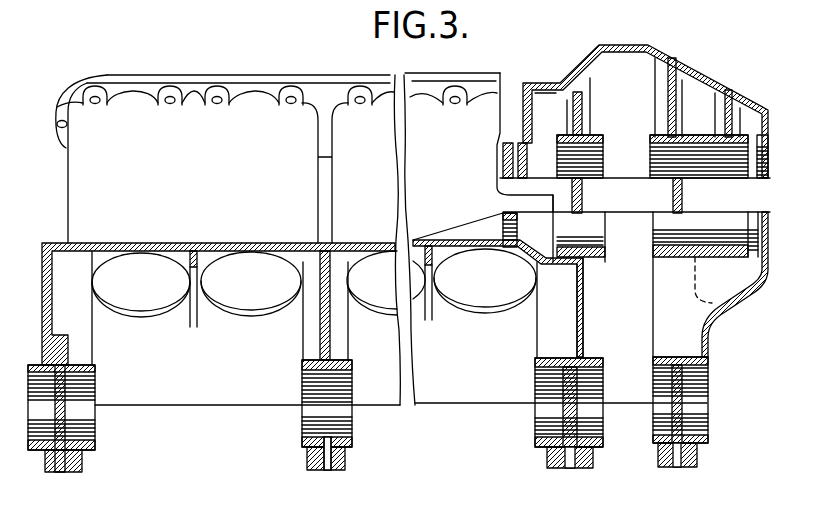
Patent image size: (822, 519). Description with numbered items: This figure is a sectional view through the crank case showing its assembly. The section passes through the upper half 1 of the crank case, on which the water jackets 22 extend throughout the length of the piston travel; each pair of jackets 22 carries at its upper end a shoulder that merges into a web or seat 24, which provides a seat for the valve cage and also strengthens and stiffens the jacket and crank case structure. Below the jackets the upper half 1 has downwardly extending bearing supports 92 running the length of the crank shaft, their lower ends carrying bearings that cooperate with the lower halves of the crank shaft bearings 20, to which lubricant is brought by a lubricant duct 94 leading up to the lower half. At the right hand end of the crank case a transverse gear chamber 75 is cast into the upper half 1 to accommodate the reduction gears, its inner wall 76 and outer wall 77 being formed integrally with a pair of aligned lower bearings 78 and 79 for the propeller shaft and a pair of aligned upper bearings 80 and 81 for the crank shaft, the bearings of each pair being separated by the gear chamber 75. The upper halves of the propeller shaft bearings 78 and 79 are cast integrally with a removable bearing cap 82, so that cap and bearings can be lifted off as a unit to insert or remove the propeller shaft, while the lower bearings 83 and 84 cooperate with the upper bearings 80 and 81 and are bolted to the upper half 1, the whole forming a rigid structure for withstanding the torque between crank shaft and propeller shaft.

The upper half 1 is at (555, 239).
The bearings 20 is at (96, 412).
The jackets 22 is at (221, 240).
The web or seat 24 is at (327, 87).
The gear chamber 75 is at (589, 309).
The inner wall 76 is at (586, 318).
The outer wall 77 is at (714, 306).
The inner lower bearing 78 is at (607, 237).
The outer lower bearing 79 is at (720, 224).
The inner upper bearing 80 is at (540, 383).
The outer upper bearing 81 is at (708, 378).
The bearing cap 82 is at (697, 76).
The lower bearing 83 is at (545, 449).
The lower bearing 84 is at (672, 442).
The bearing supports 92 is at (303, 332).
The lubricant duct 94 is at (330, 470).